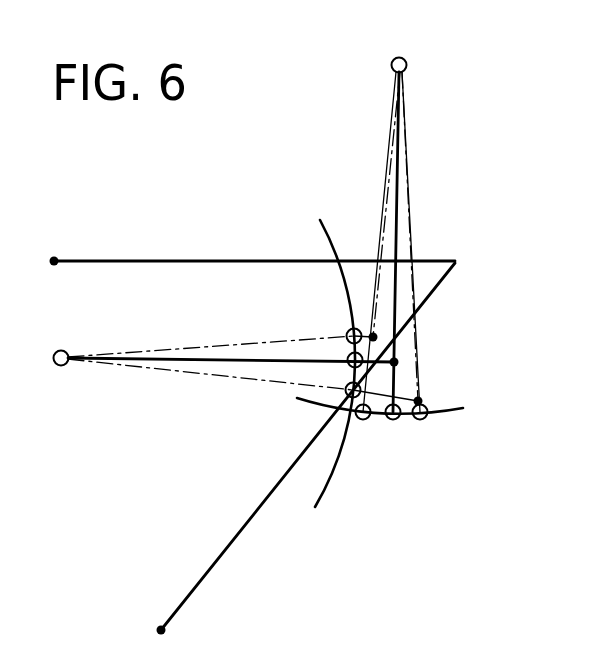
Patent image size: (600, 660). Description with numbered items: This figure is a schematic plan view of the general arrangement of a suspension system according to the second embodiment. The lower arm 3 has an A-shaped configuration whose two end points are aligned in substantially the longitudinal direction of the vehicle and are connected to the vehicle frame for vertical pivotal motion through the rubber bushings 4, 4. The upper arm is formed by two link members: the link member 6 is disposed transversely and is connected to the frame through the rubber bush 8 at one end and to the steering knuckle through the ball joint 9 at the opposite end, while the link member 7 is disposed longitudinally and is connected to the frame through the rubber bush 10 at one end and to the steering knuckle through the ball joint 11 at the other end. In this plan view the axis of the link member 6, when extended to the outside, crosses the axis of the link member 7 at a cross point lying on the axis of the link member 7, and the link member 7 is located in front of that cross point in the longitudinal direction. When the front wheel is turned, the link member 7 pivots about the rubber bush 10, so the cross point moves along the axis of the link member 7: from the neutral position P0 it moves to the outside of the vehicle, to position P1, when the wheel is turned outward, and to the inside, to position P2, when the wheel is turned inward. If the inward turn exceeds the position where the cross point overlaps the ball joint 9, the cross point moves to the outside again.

The lower arm 3 is at (236, 540).
The rubber bushings 4 is at (57, 255).
The link member 6 is at (210, 363).
The link member 7 is at (398, 230).
The rubber bush 8 is at (61, 366).
The ball joint 9 is at (346, 355).
The rubber bush 10 is at (406, 65).
The ball joint 11 is at (392, 421).
The cross point position P2 is at (373, 337).
The cross point position P0 is at (394, 362).
The cross point position P1 is at (418, 401).